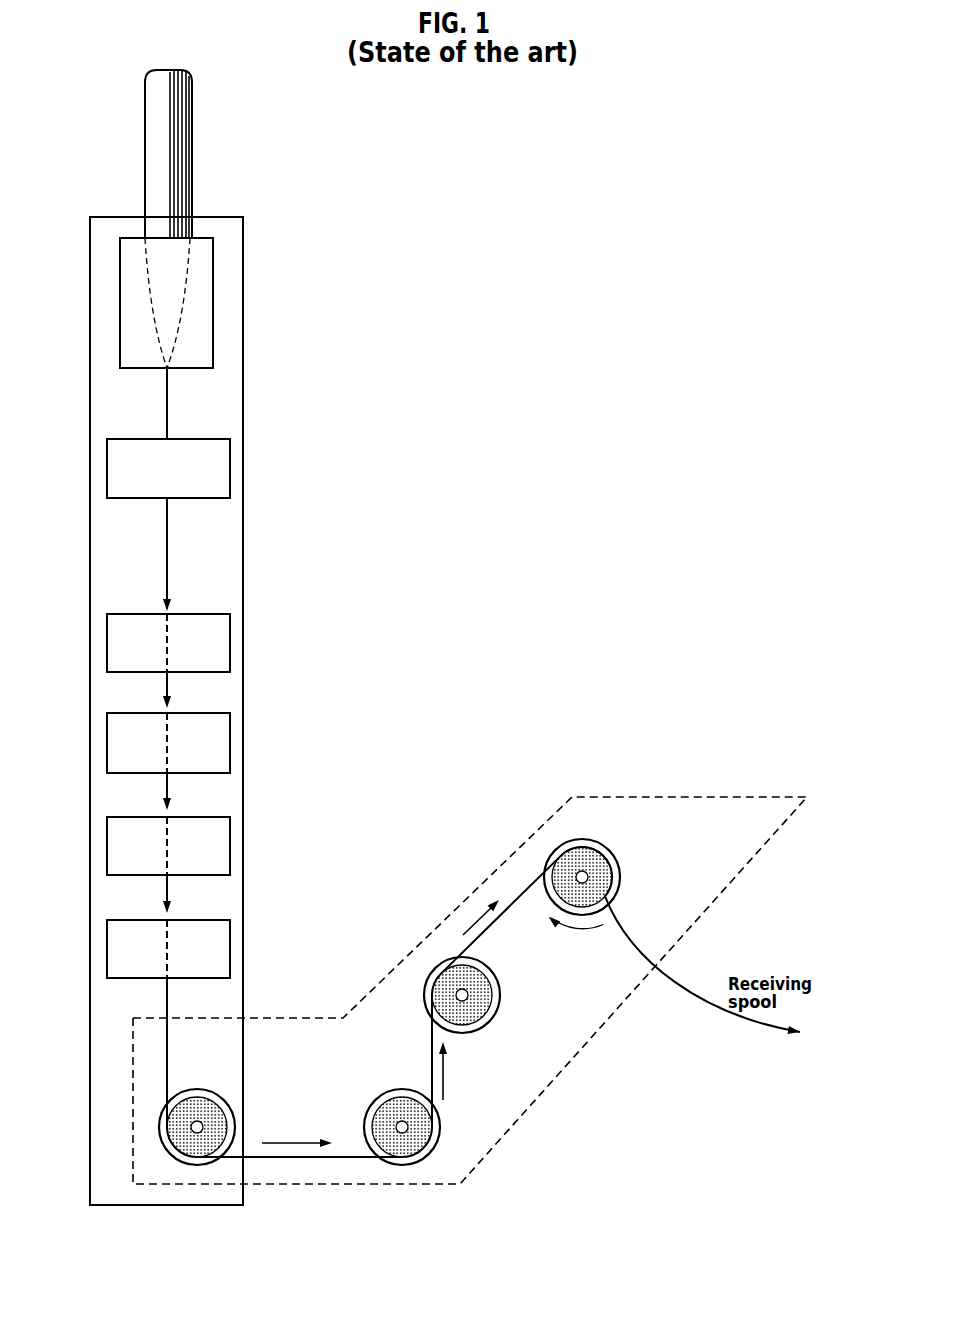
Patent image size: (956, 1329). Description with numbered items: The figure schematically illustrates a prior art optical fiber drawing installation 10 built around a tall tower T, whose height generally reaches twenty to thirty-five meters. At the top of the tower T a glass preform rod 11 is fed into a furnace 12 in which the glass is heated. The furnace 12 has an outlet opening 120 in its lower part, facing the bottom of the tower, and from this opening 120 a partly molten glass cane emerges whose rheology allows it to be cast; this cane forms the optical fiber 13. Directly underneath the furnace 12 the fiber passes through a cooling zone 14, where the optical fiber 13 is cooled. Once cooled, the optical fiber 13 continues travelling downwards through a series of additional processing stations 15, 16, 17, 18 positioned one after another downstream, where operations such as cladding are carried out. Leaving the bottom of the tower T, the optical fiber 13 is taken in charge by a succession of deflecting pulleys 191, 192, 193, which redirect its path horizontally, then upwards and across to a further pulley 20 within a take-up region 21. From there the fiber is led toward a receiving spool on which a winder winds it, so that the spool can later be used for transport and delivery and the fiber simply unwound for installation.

The optical fiber drawing tower 10 is at (302, 127).
The optical fiber preform 11 is at (192, 150).
The furnace 12 is at (213, 290).
The outlet opening 120 is at (170, 366).
The optical fiber 13 is at (168, 396).
The cooling zone 14 is at (196, 439).
The processing station 15 is at (231, 640).
The processing station 16 is at (231, 741).
The processing station 17 is at (231, 841).
The processing station 18 is at (231, 944).
The tower T is at (216, 556).
The first guide roller 191 is at (224, 1099).
The second guide roller 192 is at (381, 1096).
The third guide roller 193 is at (493, 972).
The capstan 20 is at (605, 848).
The take-up unit 21 is at (690, 757).